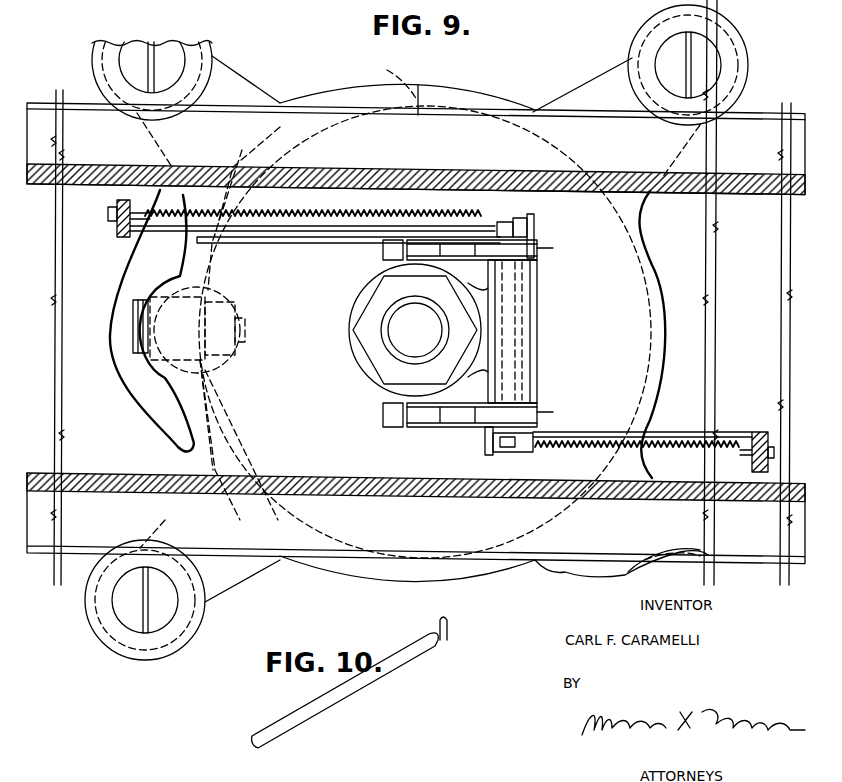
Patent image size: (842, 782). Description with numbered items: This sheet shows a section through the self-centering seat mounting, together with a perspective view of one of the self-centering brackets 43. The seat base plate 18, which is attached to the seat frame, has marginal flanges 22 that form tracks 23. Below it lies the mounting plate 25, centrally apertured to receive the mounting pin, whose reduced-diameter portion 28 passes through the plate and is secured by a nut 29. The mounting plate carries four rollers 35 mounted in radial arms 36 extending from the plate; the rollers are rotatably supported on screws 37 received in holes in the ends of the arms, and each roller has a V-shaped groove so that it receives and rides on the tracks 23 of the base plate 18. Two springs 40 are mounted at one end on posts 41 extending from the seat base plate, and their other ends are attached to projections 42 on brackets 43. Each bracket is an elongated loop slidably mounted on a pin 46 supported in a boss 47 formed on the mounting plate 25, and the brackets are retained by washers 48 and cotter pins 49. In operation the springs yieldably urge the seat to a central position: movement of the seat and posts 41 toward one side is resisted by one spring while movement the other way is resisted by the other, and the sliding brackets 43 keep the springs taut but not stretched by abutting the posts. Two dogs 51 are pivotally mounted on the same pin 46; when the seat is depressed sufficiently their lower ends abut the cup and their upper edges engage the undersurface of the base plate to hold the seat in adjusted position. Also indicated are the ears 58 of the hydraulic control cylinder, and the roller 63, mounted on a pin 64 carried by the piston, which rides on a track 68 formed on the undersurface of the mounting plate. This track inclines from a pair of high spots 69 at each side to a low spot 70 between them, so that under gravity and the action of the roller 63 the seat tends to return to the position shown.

In FIG. 9, the seat base plate 18 is at (759, 108).
In FIG. 9, the marginal flanges 22 is at (537, 127).
In FIG. 9, the tracks 23 is at (578, 113).
In FIG. 9, the mounting plate 25 is at (471, 84).
In FIG. 9, the reduced-diameter portion of mounting pin 28 is at (415, 330).
In FIG. 9, the nut 29 is at (378, 357).
In FIG. 9, the rollers 35 is at (115, 52).
In FIG. 9, the radial arms 36 is at (221, 66).
In FIG. 9, the screws 37 is at (165, 53).
In FIG. 9, the springs 40 is at (333, 214).
In FIG. 9, the posts 41 is at (115, 200).
In FIG. 9, the projections 42 is at (533, 217).
In FIG. 10, the projections 42 is at (448, 633).
In FIG. 9, the brackets 43 is at (143, 232).
In FIG. 10, the brackets 43 is at (389, 695).
In FIG. 9, the pin 46 is at (510, 450).
In FIG. 9, the boss 47 is at (537, 325).
In FIG. 9, the washers 48 is at (493, 230).
In FIG. 9, the cotter pins 49 is at (515, 227).
In FIG. 9, the dogs 51 is at (553, 248).
In FIG. 9, the ears 58 is at (137, 385).
In FIG. 9, the roller 63 is at (217, 395).
In FIG. 9, the pin 64 is at (247, 340).
In FIG. 9, the track 68 is at (425, 332).
In FIG. 9, the high spots 69 is at (373, 585).
In FIG. 9, the low spot 70 is at (207, 285).